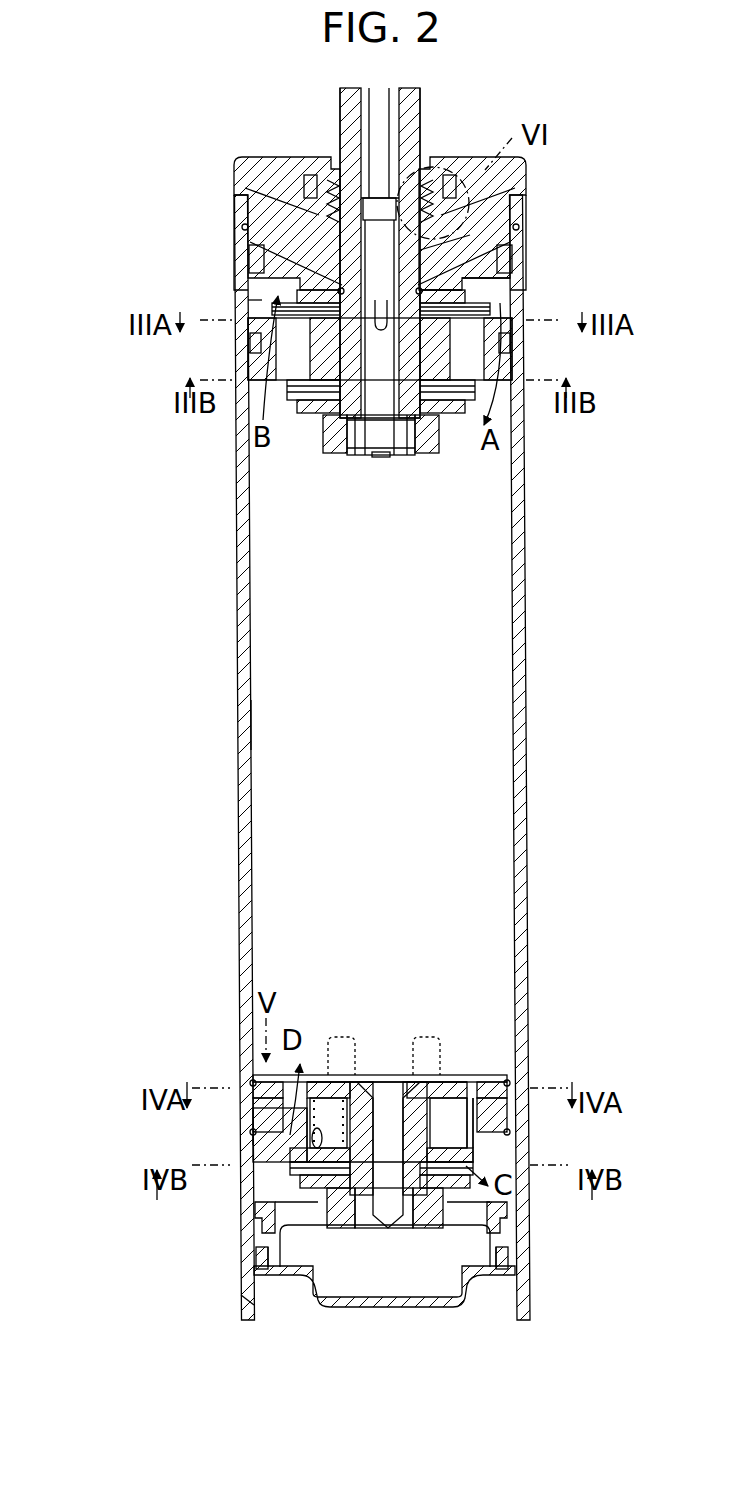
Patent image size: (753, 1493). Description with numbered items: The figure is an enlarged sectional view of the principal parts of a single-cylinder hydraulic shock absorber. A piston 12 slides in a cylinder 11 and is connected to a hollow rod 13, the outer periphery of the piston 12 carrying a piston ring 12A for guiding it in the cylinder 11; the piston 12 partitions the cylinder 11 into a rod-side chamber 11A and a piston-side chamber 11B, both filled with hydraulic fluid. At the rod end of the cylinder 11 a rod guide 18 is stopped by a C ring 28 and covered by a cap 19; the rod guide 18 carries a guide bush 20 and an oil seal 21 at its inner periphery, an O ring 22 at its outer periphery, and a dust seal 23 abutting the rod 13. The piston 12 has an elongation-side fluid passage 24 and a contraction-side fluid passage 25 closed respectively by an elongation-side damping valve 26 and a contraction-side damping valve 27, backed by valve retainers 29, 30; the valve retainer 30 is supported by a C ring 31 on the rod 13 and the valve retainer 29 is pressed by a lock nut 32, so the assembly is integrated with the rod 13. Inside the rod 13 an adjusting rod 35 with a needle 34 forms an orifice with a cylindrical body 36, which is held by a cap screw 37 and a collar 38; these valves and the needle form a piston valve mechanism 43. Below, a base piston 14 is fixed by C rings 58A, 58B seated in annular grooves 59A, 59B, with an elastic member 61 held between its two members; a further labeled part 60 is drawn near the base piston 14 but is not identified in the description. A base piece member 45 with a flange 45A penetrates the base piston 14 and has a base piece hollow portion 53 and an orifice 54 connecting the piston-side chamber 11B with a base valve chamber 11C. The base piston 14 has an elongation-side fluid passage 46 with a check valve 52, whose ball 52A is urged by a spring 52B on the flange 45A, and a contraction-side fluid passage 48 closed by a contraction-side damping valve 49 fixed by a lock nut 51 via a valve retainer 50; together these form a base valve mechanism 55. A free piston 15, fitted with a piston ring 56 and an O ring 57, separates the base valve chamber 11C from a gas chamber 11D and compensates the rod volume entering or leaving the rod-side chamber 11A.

The cylinder 11 is at (526, 735).
The rod-side chamber 11A is at (250, 302).
The piston-side chamber 11B is at (262, 722).
The base valve chamber 11C is at (255, 1140).
The gas chamber 11D is at (252, 1300).
The piston 12 is at (470, 410).
The piston ring 12A is at (460, 390).
The rod 13 is at (419, 105).
The base piston 14 is at (500, 1073).
The free piston 15 is at (487, 1292).
The rod guide 18 is at (505, 195).
The cap 19 is at (267, 157).
The guide bush 20 is at (242, 226).
The oil seal 21 is at (318, 175).
The O ring 22 is at (513, 255).
The dust seal 23 is at (445, 178).
The elongation-side fluid passage 24 is at (510, 345).
The contraction-side fluid passage 25 is at (250, 345).
The elongation-side damping valve 26 is at (440, 413).
The contraction-side damping valve 27 is at (275, 292).
The C ring 28 is at (519, 227).
The valve retainer 29 is at (300, 400).
The valve retainer 30 is at (470, 295).
The C ring 31 is at (249, 255).
The lock nut 32 is at (405, 456).
The needle 34 is at (470, 256).
The adjusting rod 35 is at (378, 138).
The cylindrical body 36 is at (325, 445).
The cap screw 37 is at (383, 458).
The collar 38 is at (350, 456).
The piston valve mechanism 43 is at (638, 405).
The base piece member 45 is at (397, 1232).
The flange 45A is at (455, 1110).
The elongation-side fluid passage 46 is at (290, 1168).
The contraction-side fluid passage 48 is at (473, 1135).
The contraction-side damping valve 49 is at (509, 1240).
The valve retainer 50 is at (509, 1210).
The lock nut 51 is at (256, 1255).
The check valve 52 is at (352, 1083).
The ball 52A is at (382, 1090).
The spring 52B is at (318, 1095).
The base piece hollow portion 53 is at (426, 1040).
The orifice 54 is at (387, 1226).
The base valve mechanism 55 is at (642, 1040).
The piston ring 56 is at (256, 1215).
The O ring 57 is at (505, 1270).
The C ring 58A is at (508, 1128).
The C ring 58B is at (510, 1075).
The annular groove 59A is at (250, 1122).
The annular groove 59B is at (262, 1073).
The O-ring 60 is at (252, 1080).
The elastic member 61 is at (509, 1082).